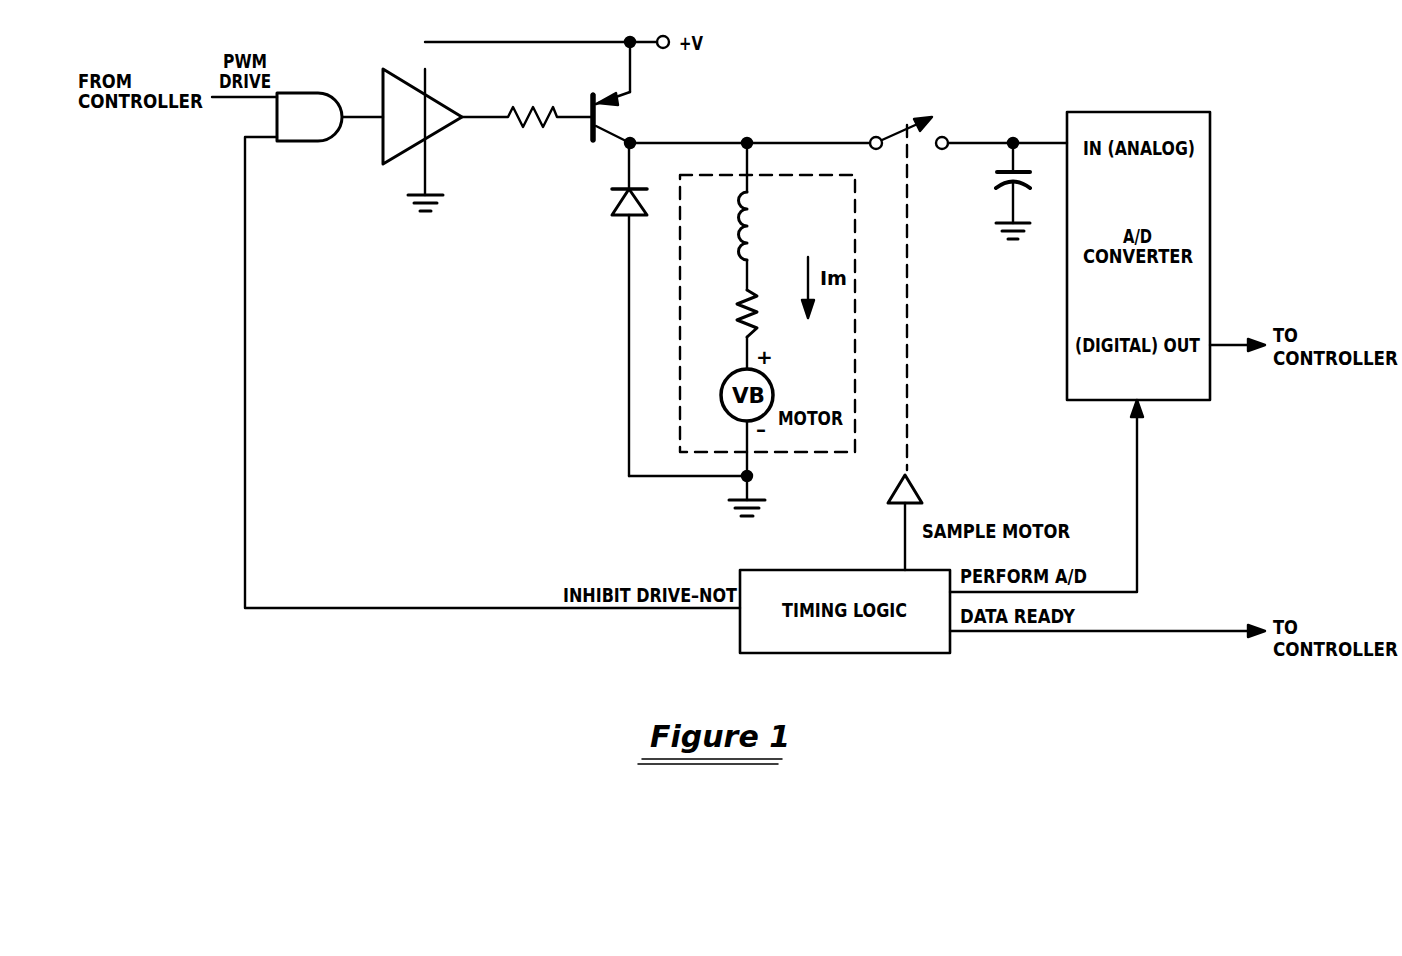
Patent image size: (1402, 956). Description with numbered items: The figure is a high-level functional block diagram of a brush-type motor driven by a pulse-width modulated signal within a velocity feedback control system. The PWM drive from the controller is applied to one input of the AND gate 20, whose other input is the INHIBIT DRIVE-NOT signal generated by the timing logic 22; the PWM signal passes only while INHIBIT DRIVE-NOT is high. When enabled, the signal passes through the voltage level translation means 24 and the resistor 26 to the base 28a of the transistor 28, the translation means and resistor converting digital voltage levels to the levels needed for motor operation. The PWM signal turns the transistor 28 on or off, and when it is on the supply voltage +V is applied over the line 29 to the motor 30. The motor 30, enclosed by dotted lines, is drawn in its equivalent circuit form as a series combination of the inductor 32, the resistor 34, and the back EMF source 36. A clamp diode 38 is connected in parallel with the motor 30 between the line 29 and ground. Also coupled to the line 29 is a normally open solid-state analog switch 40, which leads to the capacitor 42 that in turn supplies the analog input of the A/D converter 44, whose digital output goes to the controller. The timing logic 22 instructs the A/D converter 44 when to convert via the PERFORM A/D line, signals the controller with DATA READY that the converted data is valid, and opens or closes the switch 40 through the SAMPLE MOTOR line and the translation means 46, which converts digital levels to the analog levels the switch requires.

The AND gate 20 is at (316, 92).
The timing logic 22 is at (740, 637).
The voltage level translation means 24 is at (382, 152).
The resistor 26 is at (535, 122).
The transistor 28 is at (625, 112).
The base 28a is at (590, 108).
The line 29 is at (797, 143).
The motor 30 is at (800, 453).
The inductor (Lm) 32 is at (748, 227).
The resistor (Rm) 34 is at (753, 303).
The back EMF source (VB) 36 is at (772, 392).
The clamp diode 38 is at (612, 208).
The solid-state analog switch 40 is at (893, 123).
The capacitor 42 is at (995, 183).
The A/D converter 44 is at (1212, 165).
The translation means 46 is at (910, 483).